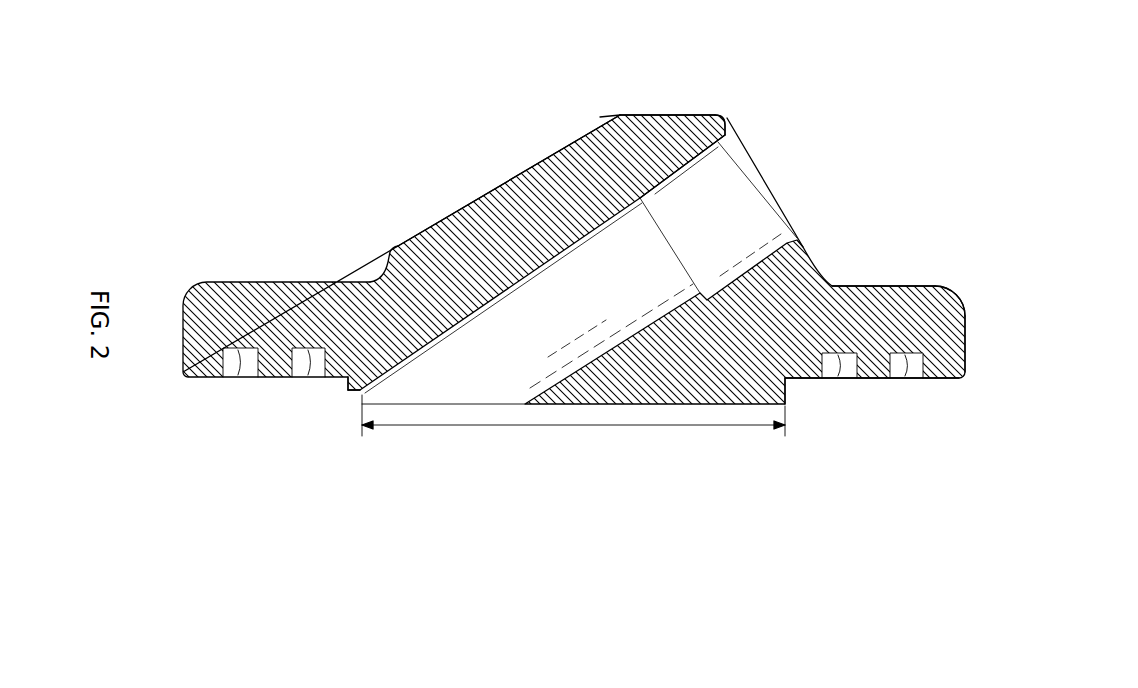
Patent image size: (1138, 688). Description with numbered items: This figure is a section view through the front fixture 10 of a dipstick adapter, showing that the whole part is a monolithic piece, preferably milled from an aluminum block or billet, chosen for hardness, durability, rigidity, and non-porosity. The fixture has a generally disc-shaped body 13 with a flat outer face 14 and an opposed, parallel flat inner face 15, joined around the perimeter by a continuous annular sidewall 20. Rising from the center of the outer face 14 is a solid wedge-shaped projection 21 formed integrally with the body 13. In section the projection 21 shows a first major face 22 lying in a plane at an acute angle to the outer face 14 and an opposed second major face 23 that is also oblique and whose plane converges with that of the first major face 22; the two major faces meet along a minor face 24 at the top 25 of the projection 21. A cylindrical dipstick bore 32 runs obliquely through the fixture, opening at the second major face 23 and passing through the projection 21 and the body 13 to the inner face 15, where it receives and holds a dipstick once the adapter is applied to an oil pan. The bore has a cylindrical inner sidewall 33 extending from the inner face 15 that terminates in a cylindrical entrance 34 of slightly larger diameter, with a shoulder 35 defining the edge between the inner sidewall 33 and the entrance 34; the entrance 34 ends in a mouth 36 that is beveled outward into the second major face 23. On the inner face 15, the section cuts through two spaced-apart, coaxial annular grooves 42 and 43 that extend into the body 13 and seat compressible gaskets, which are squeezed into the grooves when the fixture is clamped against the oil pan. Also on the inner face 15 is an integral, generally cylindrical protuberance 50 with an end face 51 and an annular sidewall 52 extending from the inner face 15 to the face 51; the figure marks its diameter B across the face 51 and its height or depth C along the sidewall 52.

The front fixture 10 is at (1058, 543).
The body 13 is at (955, 289).
The outer face 14 is at (887, 286).
The inner face 15 is at (934, 382).
The annular sidewall 20 is at (967, 350).
The projection 21 is at (387, 243).
The first major face 22 is at (458, 210).
The second major face 23 is at (726, 116).
The minor face 24 is at (636, 114).
The top 25 is at (617, 121).
The dipstick bore 32 is at (730, 206).
The inner sidewall 33 is at (497, 305).
The entrance 34 is at (665, 178).
The shoulder 35 is at (643, 204).
The mouth 36 is at (745, 160).
The groove 42 is at (292, 380).
The groove 43 is at (226, 379).
The protuberance 50 is at (347, 390).
The face 51 is at (582, 406).
The annular sidewall 52 is at (788, 407).
The diameter B is at (690, 428).
The height C is at (345, 390).